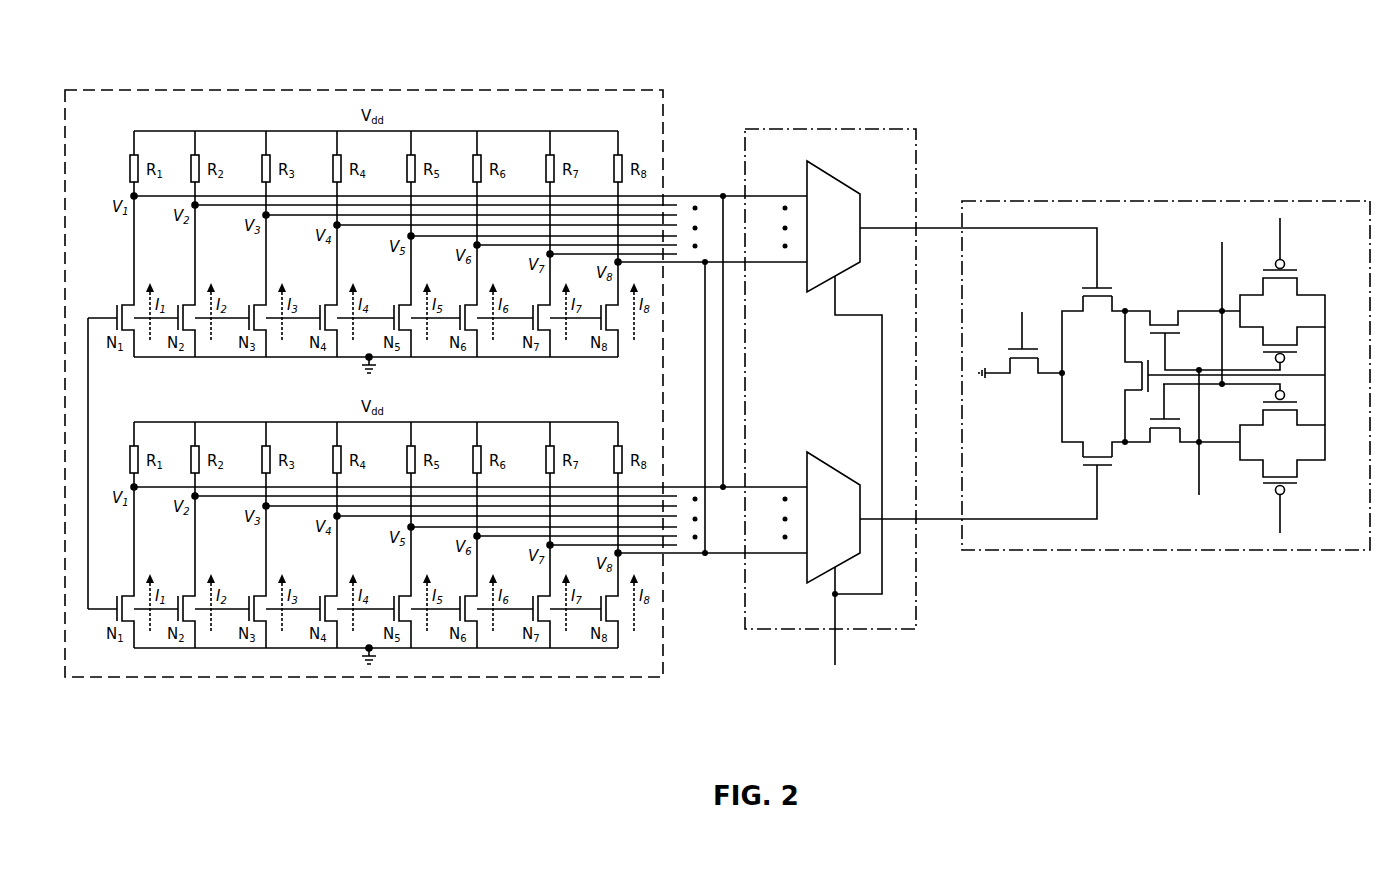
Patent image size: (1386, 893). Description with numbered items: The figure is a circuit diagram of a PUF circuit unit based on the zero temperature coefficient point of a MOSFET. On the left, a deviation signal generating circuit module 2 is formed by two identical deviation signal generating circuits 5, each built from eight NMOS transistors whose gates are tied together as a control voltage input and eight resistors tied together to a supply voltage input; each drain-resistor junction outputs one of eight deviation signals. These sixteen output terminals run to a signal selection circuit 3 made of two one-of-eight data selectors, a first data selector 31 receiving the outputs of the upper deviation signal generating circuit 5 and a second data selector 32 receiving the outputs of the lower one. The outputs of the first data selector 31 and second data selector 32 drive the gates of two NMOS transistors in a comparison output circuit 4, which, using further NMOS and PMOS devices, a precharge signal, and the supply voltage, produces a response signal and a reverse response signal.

The deviation signal generating circuit module 2 is at (283, 90).
The deviation signal generating circuit 5 is at (457, 172).
The signal selection circuit 3 is at (895, 377).
The first data selector 31 is at (830, 203).
The second data selector 32 is at (842, 535).
The comparison output circuit 4 is at (1167, 198).